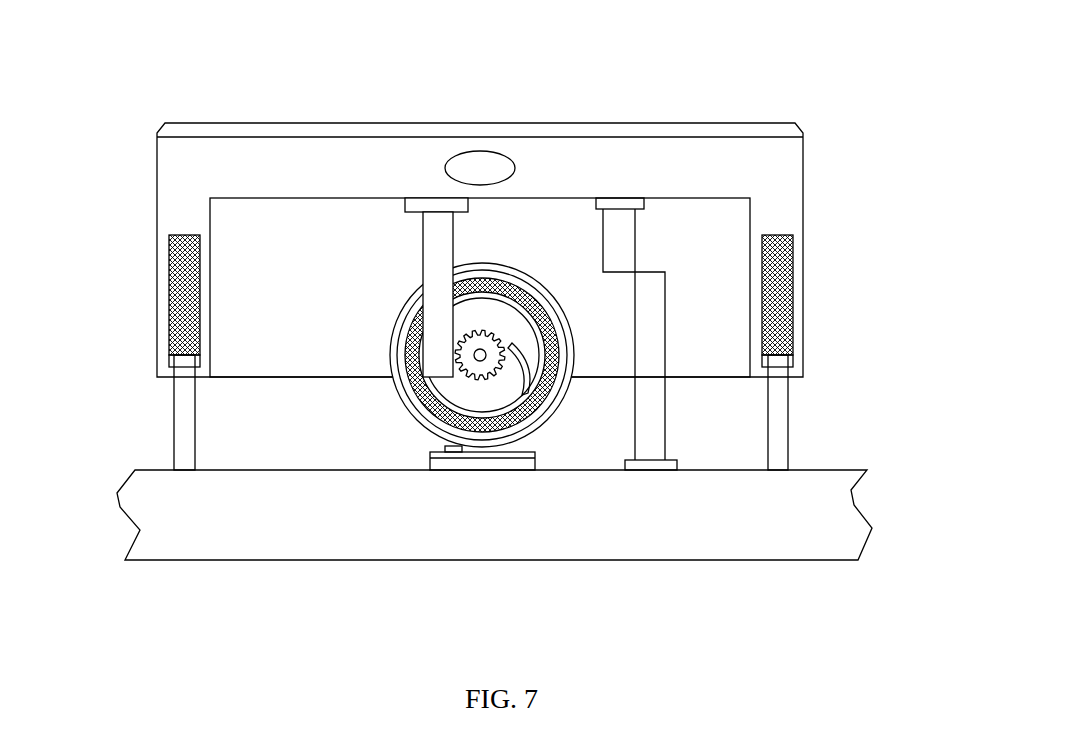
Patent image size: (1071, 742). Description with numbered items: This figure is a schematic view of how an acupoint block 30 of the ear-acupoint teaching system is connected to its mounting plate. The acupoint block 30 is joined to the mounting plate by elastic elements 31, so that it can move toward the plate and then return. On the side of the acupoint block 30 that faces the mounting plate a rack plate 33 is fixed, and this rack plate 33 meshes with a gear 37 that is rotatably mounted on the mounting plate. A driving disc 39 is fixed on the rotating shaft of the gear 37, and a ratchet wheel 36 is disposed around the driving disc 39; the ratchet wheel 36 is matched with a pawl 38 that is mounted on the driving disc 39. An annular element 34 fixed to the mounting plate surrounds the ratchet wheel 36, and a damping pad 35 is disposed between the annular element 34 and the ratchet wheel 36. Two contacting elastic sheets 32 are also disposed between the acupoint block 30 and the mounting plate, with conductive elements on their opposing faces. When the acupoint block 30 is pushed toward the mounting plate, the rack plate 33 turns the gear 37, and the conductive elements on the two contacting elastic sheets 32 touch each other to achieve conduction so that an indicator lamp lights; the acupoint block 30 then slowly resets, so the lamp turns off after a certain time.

The acupoint block 30 is at (774, 163).
The elastic elements 31 is at (777, 285).
The contacting elastic sheets 32 is at (621, 224).
The rack plate 33 is at (421, 226).
The annular element 34 is at (387, 340).
The damping pad 35 is at (403, 403).
The ratchet wheel 36 is at (478, 422).
The gear 37 is at (503, 375).
The pawl 38 is at (537, 372).
The driving disc 39 is at (447, 400).